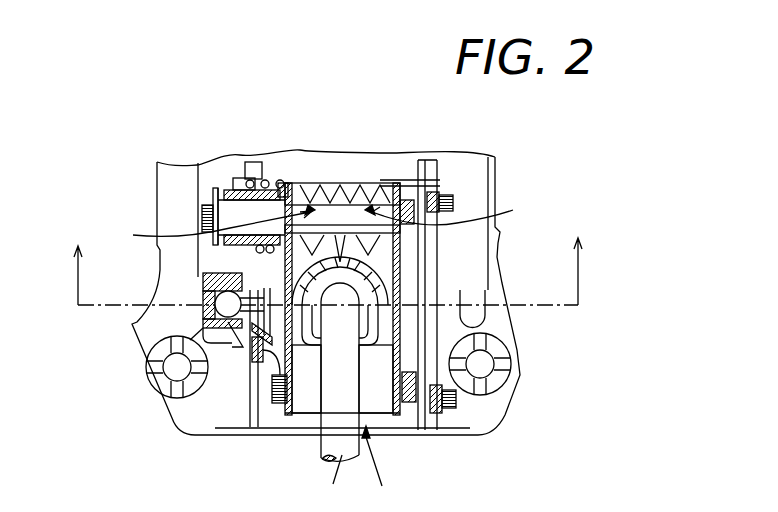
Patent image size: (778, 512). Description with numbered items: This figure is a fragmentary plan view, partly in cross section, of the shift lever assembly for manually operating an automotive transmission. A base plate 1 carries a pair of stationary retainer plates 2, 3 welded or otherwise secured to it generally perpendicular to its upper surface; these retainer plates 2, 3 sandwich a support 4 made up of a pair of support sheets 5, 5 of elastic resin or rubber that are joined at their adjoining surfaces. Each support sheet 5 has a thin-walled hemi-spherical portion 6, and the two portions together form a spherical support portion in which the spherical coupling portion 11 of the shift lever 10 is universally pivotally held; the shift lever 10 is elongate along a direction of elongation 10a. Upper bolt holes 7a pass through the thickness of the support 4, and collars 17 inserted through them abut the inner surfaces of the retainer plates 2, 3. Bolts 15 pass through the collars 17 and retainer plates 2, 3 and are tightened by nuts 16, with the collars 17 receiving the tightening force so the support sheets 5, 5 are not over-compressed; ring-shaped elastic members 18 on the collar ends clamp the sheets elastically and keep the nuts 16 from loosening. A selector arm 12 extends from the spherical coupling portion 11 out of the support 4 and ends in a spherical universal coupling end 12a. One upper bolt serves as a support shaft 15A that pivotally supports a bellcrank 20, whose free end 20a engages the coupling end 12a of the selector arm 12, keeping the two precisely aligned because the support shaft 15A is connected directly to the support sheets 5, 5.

The base plate 1 is at (546, 223).
The retainer plate 2 is at (287, 183).
The retainer plate 3 is at (391, 183).
The support 4 is at (375, 468).
The support sheet 5 is at (380, 398).
The hemi-spherical portion 6 is at (400, 260).
The upper bolt hole 7a is at (323, 221).
The shift lever 10 is at (352, 367).
The direction of elongation 10a is at (337, 483).
The spherical coupling portion 11 is at (367, 292).
The selector arm 12 is at (253, 365).
The spherical universal coupling end 12a is at (228, 300).
The bolt 15 is at (455, 397).
The support shaft 15A is at (203, 215).
The nut 16 is at (437, 404).
The collar 17 is at (332, 183).
The elastic member 18 is at (388, 183).
The bellcrank 20 is at (242, 176).
The free end 20a is at (240, 347).